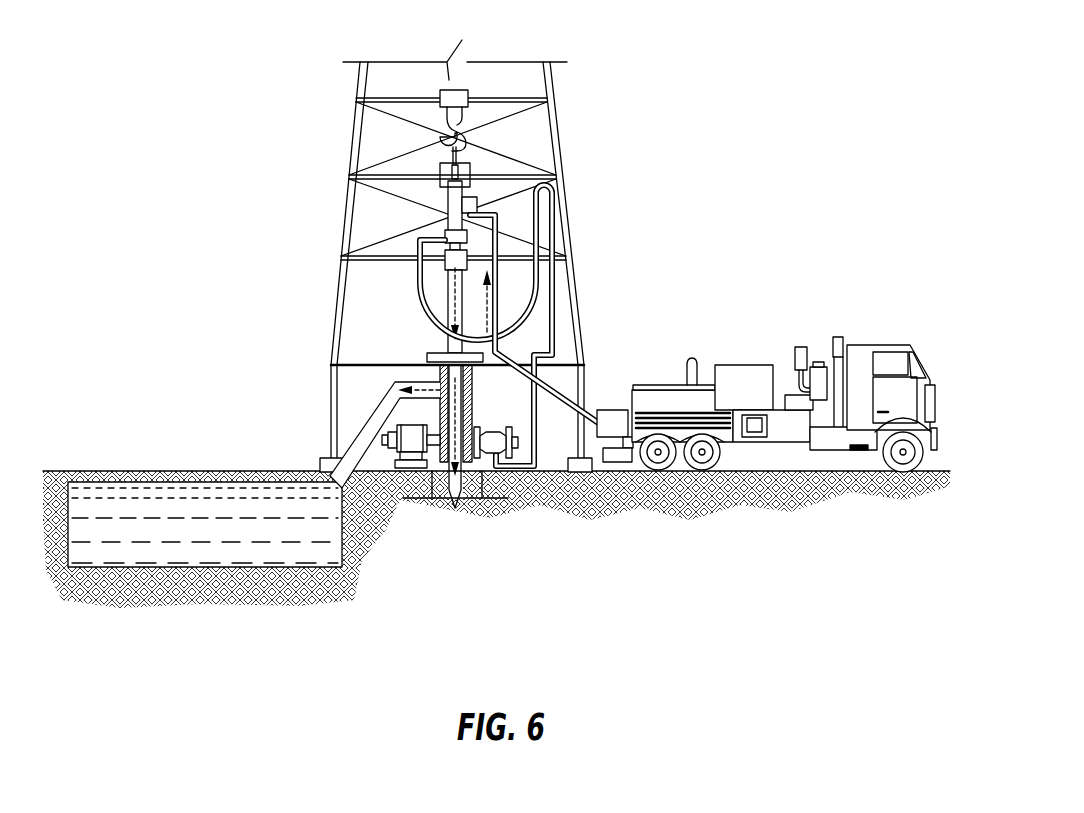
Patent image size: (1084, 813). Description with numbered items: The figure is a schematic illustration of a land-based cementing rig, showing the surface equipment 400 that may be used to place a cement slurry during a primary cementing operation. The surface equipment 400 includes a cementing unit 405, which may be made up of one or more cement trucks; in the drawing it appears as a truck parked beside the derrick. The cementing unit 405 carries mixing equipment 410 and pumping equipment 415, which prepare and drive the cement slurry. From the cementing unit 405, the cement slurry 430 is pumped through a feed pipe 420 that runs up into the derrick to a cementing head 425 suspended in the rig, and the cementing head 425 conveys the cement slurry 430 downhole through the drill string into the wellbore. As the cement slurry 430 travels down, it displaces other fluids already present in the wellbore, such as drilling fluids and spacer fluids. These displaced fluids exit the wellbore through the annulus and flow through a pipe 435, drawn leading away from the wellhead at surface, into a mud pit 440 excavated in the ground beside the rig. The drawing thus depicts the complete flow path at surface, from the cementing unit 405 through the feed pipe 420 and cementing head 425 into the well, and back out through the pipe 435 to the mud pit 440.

The surface equipment 400 is at (742, 42).
The cementing unit 405 is at (767, 445).
The mixing equipment 410 is at (755, 431).
The pumping equipment 415 is at (615, 409).
The feed pipe 420 is at (555, 380).
The cementing head 425 is at (481, 157).
The cement slurry 430 is at (453, 308).
The pipe 435 is at (360, 462).
The mud pit 440 is at (203, 568).